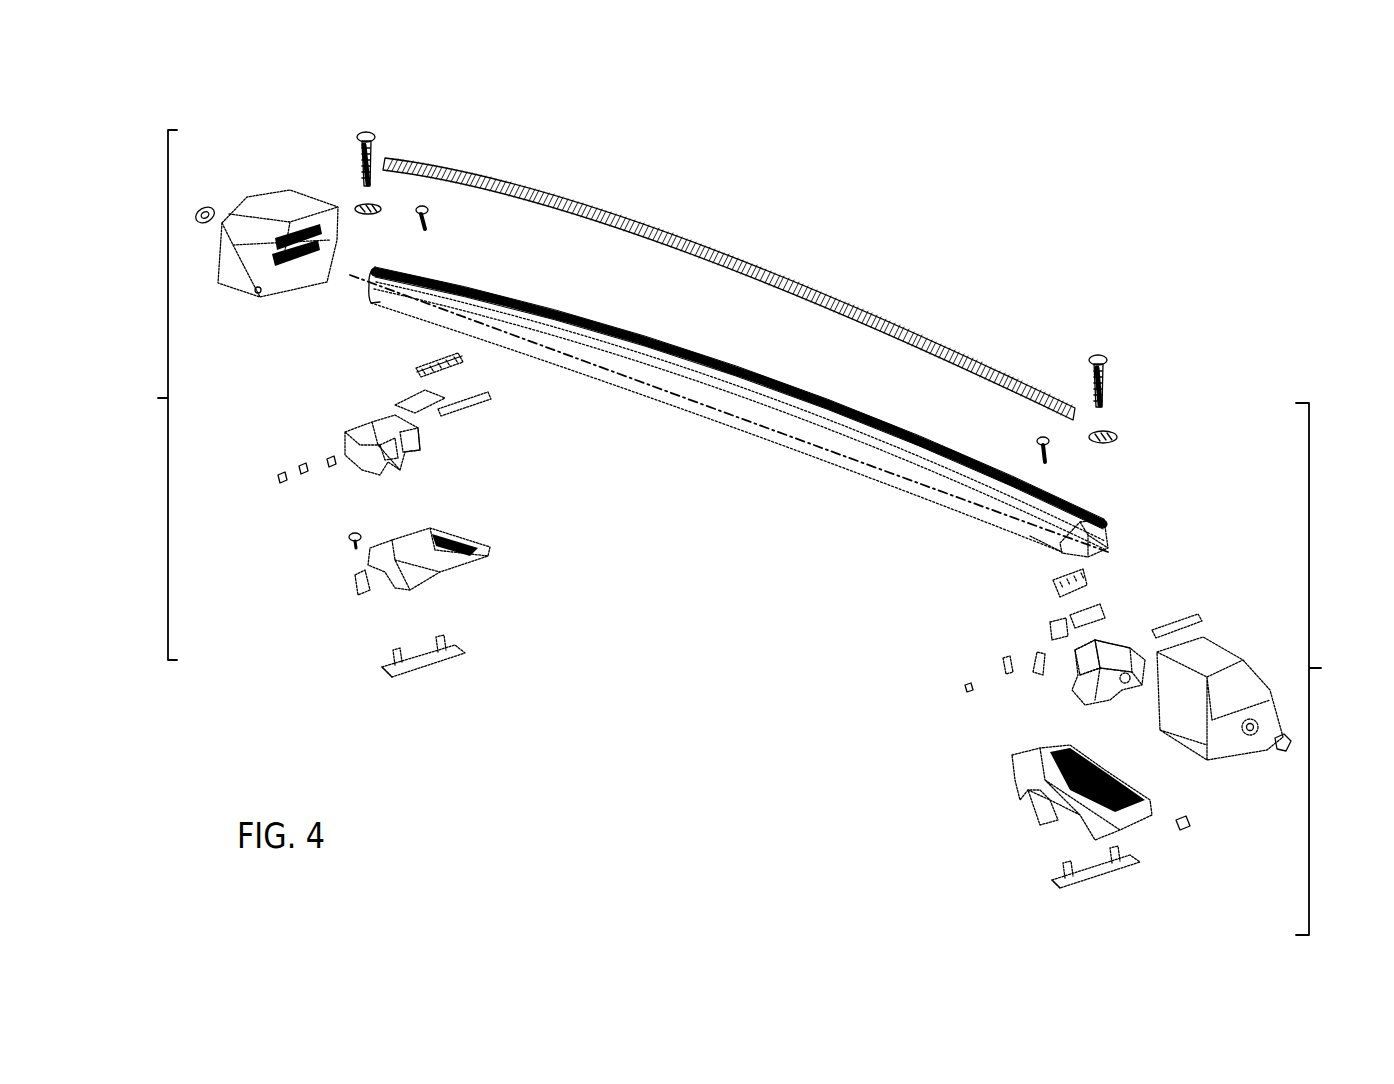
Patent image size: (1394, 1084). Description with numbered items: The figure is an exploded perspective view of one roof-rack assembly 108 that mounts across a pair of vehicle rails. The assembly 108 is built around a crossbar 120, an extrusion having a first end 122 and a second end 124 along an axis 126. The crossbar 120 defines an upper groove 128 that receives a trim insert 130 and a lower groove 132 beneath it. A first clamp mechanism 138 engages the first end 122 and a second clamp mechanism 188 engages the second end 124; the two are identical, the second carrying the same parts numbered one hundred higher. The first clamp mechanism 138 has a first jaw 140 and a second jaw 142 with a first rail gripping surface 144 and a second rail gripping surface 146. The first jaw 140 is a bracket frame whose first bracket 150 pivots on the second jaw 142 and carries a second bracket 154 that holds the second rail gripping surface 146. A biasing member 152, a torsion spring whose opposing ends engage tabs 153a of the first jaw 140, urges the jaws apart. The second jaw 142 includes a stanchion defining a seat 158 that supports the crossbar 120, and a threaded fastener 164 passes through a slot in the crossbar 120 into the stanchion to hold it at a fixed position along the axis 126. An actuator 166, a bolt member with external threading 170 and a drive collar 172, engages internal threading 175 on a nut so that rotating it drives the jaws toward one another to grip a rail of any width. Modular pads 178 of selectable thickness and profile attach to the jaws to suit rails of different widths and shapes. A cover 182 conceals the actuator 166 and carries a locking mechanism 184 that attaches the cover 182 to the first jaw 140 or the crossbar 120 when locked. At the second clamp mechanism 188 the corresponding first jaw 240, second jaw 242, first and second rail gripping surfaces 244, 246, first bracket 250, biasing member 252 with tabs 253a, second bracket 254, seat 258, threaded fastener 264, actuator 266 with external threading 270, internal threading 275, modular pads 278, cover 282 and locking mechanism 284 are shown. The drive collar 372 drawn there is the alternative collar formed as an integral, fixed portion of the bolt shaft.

The assembly 108 is at (203, 111).
The crossbar 120 is at (760, 373).
The first end 122 is at (1030, 540).
The second end 124 is at (380, 298).
The axis 126 is at (1108, 552).
The upper groove 128 is at (1090, 530).
The trim insert 130 is at (690, 242).
The lower groove 132 is at (1056, 566).
The first clamp mechanism 138 is at (1331, 669).
The first jaw 140 is at (1136, 698).
The second jaw 142 is at (1045, 800).
The first rail gripping surface 144 is at (1048, 578).
The second rail gripping surface 146 is at (1055, 885).
The first bracket 150 is at (1130, 648).
The biasing member 152 is at (1012, 680).
The tabs 153a is at (1105, 652).
The second bracket 154 is at (1085, 652).
The seat 158 is at (1040, 748).
The threaded fastener 164 is at (1038, 446).
The actuator 166 is at (1095, 355).
The external threading 170 is at (1102, 380).
The drive collar 172 is at (1120, 435).
The internal threading 175 is at (1195, 815).
The modular pads 178 is at (1037, 610).
The cover 182 is at (1215, 642).
The locking mechanism 184 is at (1297, 740).
The second clamp mechanism 188 is at (140, 395).
The first jaw 240 is at (418, 443).
The second jaw 242 is at (355, 592).
The first rail gripping surface 244 is at (460, 357).
The second rail gripping surface 246 is at (388, 668).
The first bracket 250 is at (345, 432).
The biasing member 252 is at (325, 470).
The tabs 253a is at (385, 445).
The second bracket 254 is at (443, 398).
The seat 258 is at (490, 535).
The threaded fastener 264 is at (427, 218).
The actuator 266 is at (368, 130).
The external threading 270 is at (358, 160).
The internal threading 275 is at (350, 537).
The modular pads 278 is at (418, 372).
The cover 282 is at (255, 292).
The locking mechanism 284 is at (205, 224).
The drive collar 372 is at (362, 206).